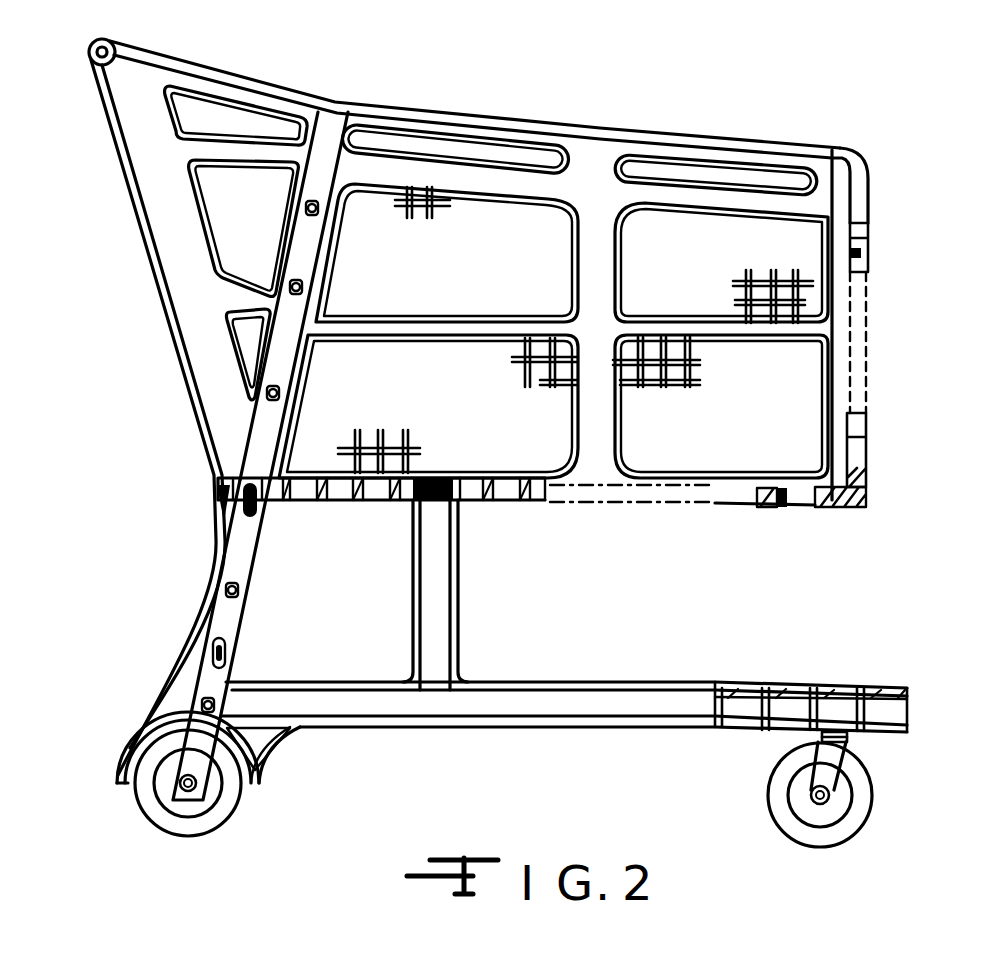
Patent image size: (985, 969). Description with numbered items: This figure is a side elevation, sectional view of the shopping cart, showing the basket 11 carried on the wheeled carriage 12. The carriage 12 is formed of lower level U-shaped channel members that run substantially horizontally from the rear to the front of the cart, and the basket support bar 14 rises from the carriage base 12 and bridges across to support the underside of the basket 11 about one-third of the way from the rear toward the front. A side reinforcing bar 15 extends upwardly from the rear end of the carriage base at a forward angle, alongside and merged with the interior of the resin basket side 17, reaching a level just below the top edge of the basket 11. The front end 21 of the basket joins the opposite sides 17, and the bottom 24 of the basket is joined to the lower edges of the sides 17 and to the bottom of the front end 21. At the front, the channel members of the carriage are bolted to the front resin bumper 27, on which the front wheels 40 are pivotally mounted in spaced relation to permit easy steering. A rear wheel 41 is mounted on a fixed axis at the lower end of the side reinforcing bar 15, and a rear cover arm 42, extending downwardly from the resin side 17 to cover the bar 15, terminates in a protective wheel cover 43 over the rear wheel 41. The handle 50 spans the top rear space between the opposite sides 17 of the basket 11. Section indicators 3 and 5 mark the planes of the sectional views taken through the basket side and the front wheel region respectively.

The basket 11 is at (812, 371).
The wheeled carriage 12 is at (539, 715).
The basket support bar 14 is at (437, 605).
The side reinforcing bar 15 is at (303, 250).
The basket side 17 is at (790, 142).
The front end of basket 21 is at (852, 185).
The basket bottom 24 is at (503, 502).
The front resin bumper 27 is at (893, 688).
The front wheel 40 is at (878, 791).
The rear wheel 41 is at (240, 807).
The rear cover arm 42 is at (259, 564).
The protective wheel cover 43 is at (137, 704).
The handle 50 is at (116, 58).
The section line 3- 3 is at (273, 162).
The section line 5- 5 is at (855, 660).